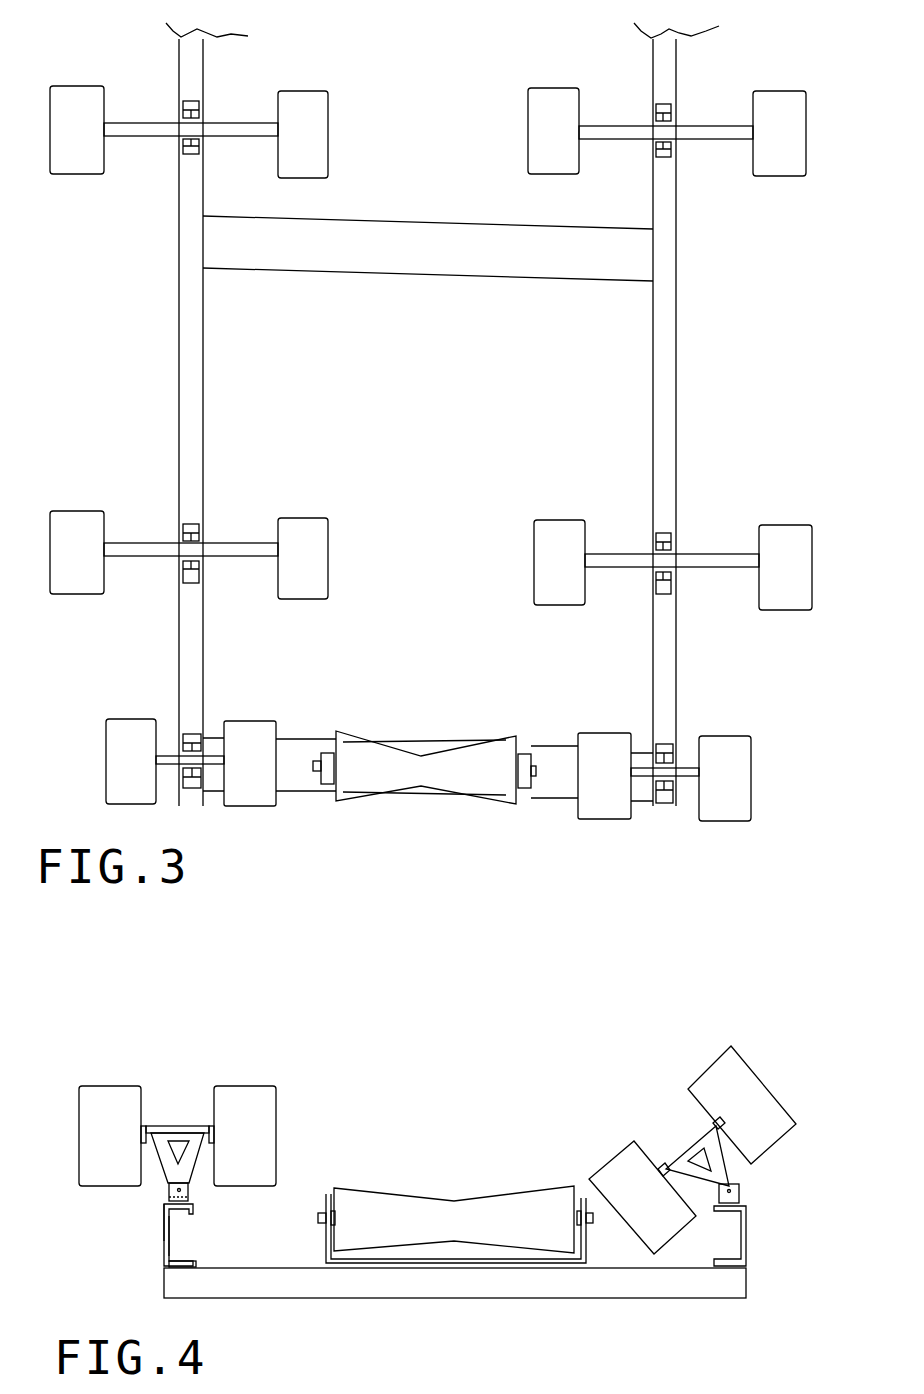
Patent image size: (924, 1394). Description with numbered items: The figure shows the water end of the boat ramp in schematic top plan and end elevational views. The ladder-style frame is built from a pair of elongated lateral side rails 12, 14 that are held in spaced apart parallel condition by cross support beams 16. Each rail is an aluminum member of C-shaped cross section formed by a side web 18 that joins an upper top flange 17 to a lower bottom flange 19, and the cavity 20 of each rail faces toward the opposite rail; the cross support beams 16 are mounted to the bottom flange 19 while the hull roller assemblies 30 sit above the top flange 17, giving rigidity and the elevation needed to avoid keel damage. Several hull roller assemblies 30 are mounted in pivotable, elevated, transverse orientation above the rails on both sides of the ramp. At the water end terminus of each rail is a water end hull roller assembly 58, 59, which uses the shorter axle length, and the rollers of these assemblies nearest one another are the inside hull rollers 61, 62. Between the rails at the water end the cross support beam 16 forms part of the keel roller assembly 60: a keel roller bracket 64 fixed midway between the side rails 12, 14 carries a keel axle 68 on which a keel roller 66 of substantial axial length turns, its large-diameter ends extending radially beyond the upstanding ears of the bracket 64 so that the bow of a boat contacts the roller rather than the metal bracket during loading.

In FIG. 3, the lateral side rail 12 is at (188, 432).
In FIG. 4, the lateral side rail 12 is at (160, 1243).
In FIG. 3, the lateral side rail 14 is at (663, 400).
In FIG. 4, the lateral side rail 14 is at (745, 1233).
In FIG. 3, the cross support beam 16 is at (423, 252).
In FIG. 4, the cross support beam 16 is at (637, 1283).
In FIG. 4, the top flange 17 is at (188, 1218).
In FIG. 4, the side web 18 is at (160, 1227).
In FIG. 4, the bottom flange 19 is at (193, 1253).
In FIG. 4, the cavity 20 is at (190, 1238).
In FIG. 3, the hull roller assembly 30 is at (232, 98).
In FIG. 3, the water end hull roller assembly 58 is at (218, 712).
In FIG. 4, the water end hull roller assembly 58 is at (183, 1090).
In FIG. 3, the water end hull roller assembly 59 is at (627, 717).
In FIG. 4, the water end hull roller assembly 59 is at (668, 1072).
In FIG. 4, the keel roller assembly 60 is at (443, 1200).
In FIG. 3, the inside hull roller 61 is at (250, 790).
In FIG. 4, the inside hull roller 61 is at (255, 1112).
In FIG. 3, the inside hull roller 62 is at (625, 787).
In FIG. 4, the inside hull roller 62 is at (623, 1187).
In FIG. 3, the keel roller bracket 64 is at (323, 783).
In FIG. 4, the keel roller bracket 64 is at (450, 1262).
In FIG. 3, the keel roller 66 is at (365, 752).
In FIG. 4, the keel roller 66 is at (372, 1207).
In FIG. 3, the keel axle 68 is at (533, 767).
In FIG. 4, the keel axle 68 is at (317, 1217).